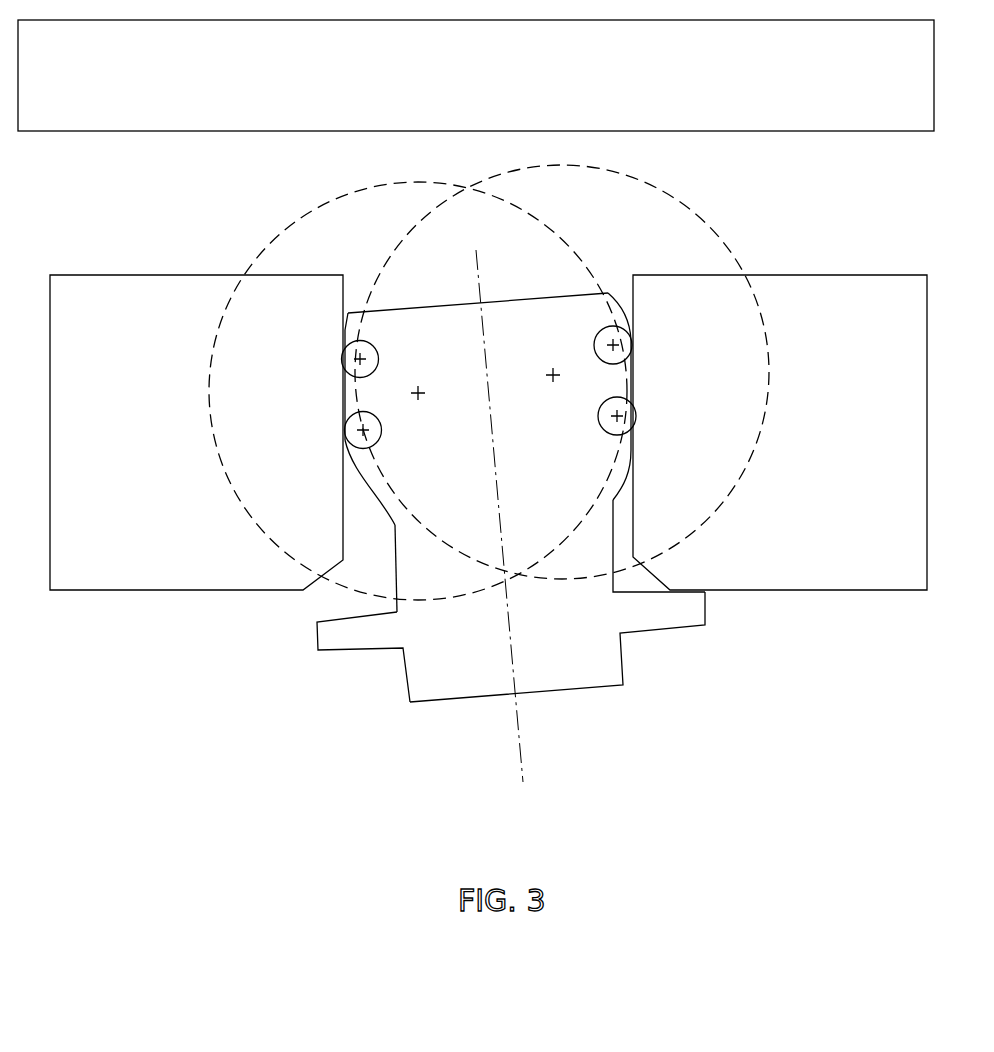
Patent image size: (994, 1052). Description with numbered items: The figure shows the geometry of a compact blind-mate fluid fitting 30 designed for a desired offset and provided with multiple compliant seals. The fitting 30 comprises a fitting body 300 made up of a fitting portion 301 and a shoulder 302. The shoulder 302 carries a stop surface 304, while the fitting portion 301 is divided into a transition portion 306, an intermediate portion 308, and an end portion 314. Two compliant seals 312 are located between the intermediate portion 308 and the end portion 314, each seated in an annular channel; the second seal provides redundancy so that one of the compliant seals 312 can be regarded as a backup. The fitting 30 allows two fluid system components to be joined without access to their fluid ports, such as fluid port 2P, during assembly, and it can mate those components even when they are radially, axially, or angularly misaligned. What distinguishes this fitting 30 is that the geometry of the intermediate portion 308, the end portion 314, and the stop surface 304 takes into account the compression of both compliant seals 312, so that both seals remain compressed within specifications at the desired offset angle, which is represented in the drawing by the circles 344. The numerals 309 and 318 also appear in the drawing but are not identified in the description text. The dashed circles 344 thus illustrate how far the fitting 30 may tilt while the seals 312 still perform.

The blind-mate fluid fitting 30 is at (439, 387).
The fluid port 2P is at (628, 295).
The circles 344 is at (696, 218).
The fitting body 300 is at (488, 601).
The fitting portion 301 is at (554, 461).
The shoulder 302 is at (680, 615).
The stop surface 304 is at (333, 613).
The transition portion 306 is at (613, 545).
The intermediate portion 308 is at (372, 483).
The barrel block 309 is at (312, 401).
The compliant seals 312 is at (622, 330).
The end portion 314 is at (345, 345).
The optical axis 318 is at (522, 757).